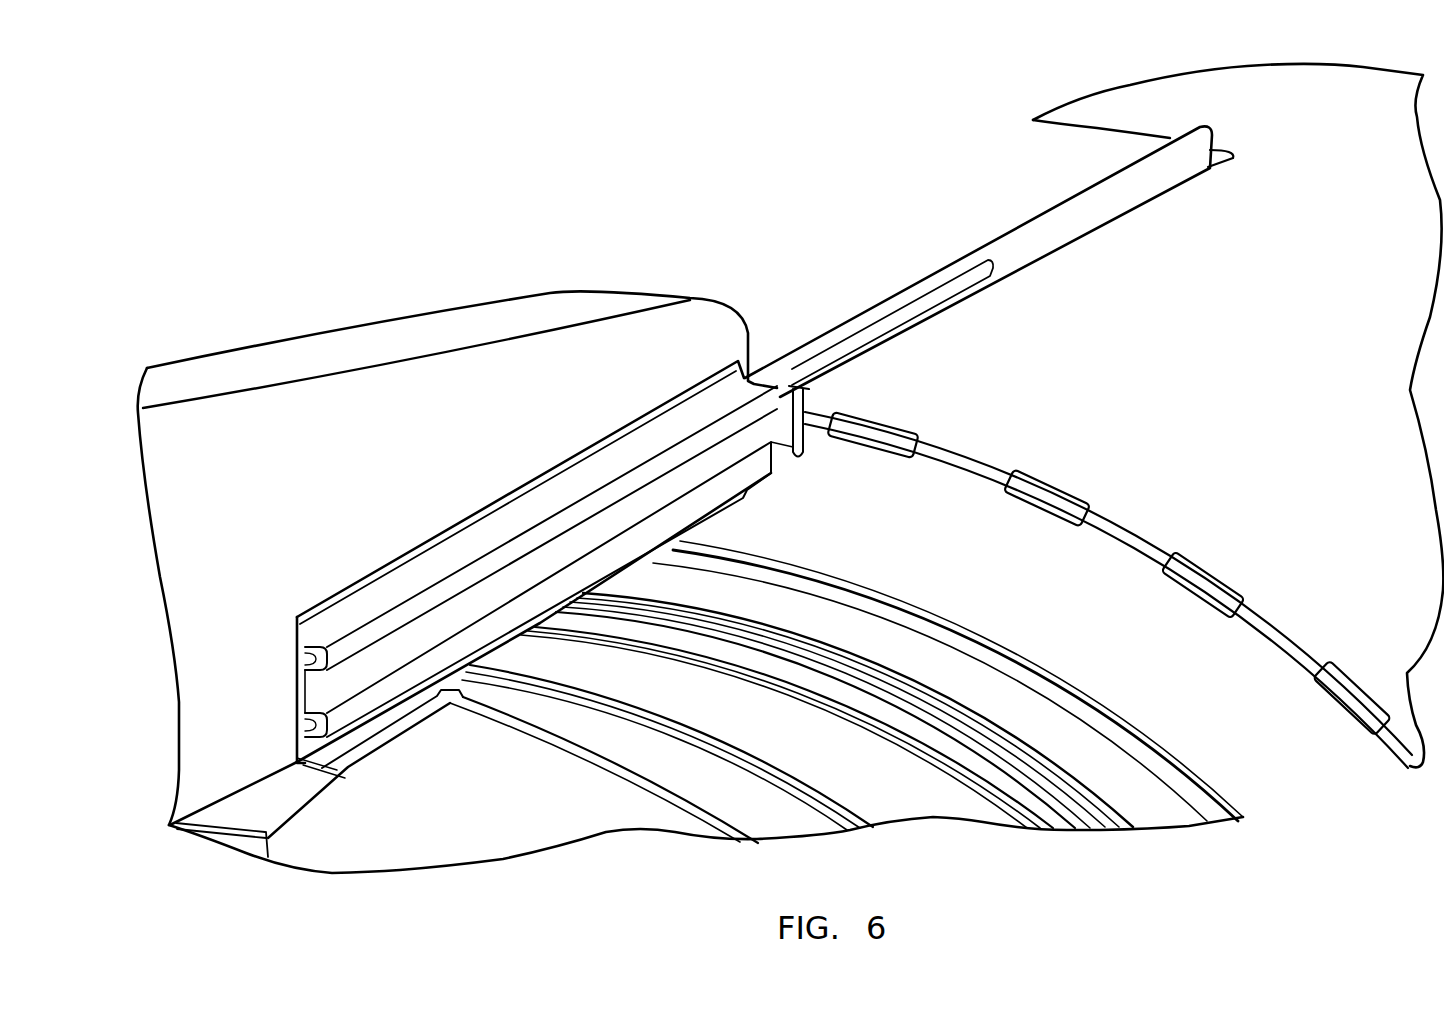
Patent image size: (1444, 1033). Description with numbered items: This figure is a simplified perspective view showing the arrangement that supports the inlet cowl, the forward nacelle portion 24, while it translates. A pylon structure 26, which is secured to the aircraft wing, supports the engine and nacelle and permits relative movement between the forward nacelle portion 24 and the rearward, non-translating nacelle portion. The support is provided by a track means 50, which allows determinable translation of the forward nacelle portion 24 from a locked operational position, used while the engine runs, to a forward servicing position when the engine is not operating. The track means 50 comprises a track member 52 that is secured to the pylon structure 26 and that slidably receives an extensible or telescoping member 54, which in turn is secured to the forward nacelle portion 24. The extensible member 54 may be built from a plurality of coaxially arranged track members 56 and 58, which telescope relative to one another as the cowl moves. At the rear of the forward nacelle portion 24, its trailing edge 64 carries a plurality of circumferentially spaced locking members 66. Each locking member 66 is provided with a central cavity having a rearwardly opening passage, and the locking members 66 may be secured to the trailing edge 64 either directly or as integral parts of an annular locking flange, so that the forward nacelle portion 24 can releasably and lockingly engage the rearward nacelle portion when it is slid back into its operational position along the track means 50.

The forward nacelle portion 24 is at (1143, 84).
The pylon structure 26 is at (628, 297).
The track means 50 is at (536, 466).
The track member 52 is at (665, 400).
The extensible member 54 is at (927, 279).
The track member 56 is at (985, 252).
The track member 58 is at (790, 420).
The trailing edge 64 is at (981, 456).
The locking members 66 is at (897, 422).